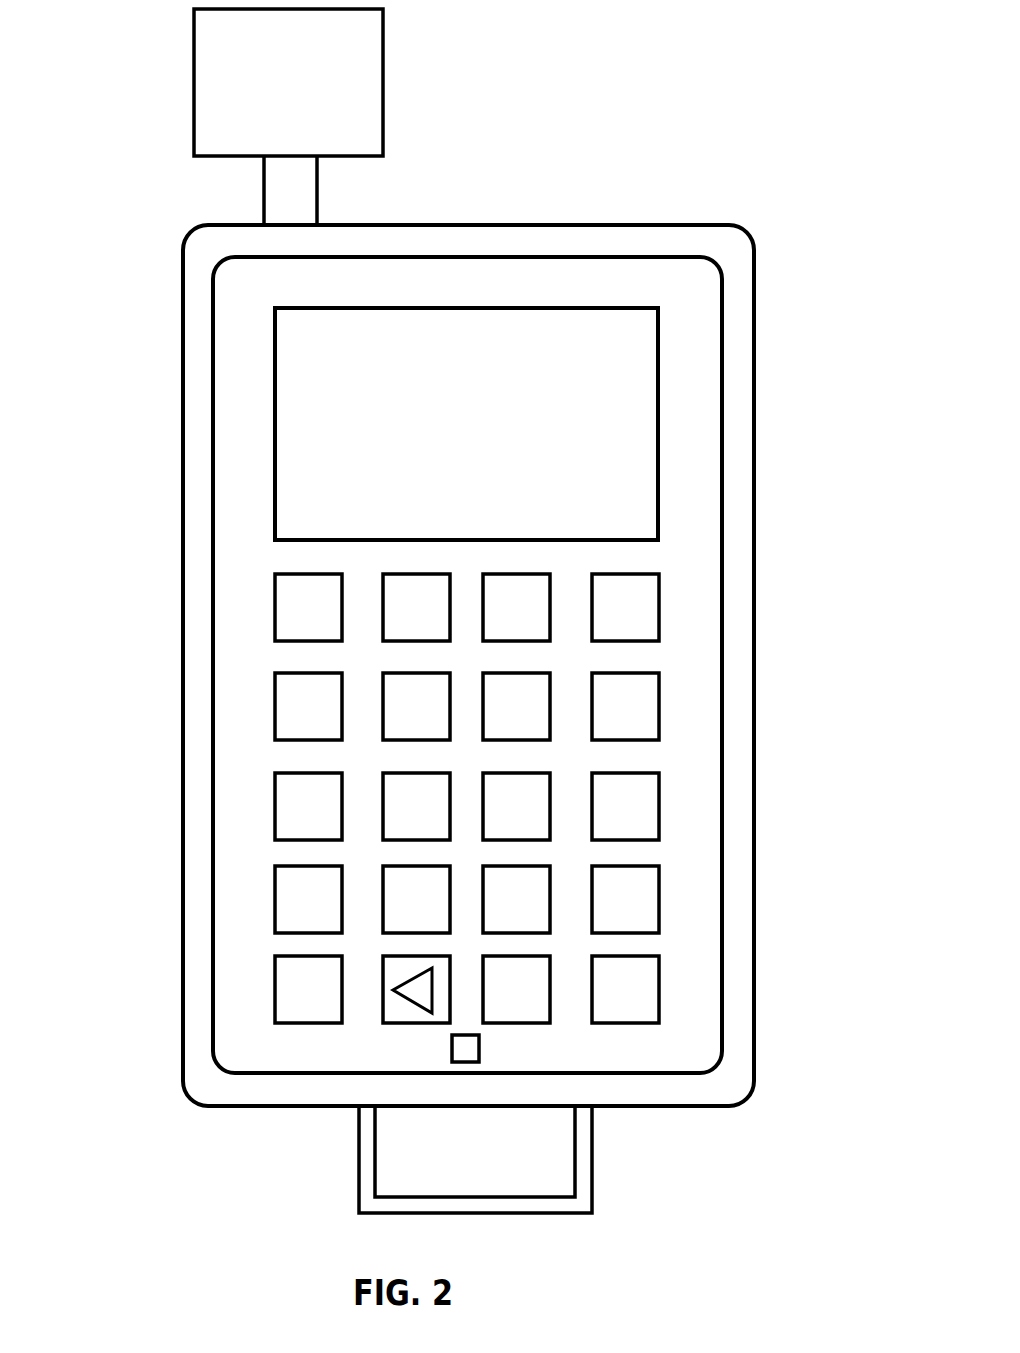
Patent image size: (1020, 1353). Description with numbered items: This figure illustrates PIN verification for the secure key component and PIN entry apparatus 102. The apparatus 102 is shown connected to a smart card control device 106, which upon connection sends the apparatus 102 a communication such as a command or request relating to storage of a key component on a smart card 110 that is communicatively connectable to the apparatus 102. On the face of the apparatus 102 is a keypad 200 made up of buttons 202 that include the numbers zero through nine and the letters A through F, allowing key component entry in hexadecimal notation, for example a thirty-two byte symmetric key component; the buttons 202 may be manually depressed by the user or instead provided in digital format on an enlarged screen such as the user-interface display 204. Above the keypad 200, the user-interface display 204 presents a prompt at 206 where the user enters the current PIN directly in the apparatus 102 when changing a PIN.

The secure key component and PIN entry apparatus 102 is at (183, 320).
The smart card control device 106 is at (268, 141).
The smart card 110 is at (455, 1176).
The keypad 200 is at (442, 703).
The buttons 202 is at (657, 572).
The user-interface display 204 is at (575, 305).
The current PIN entry prompt 206 is at (550, 345).